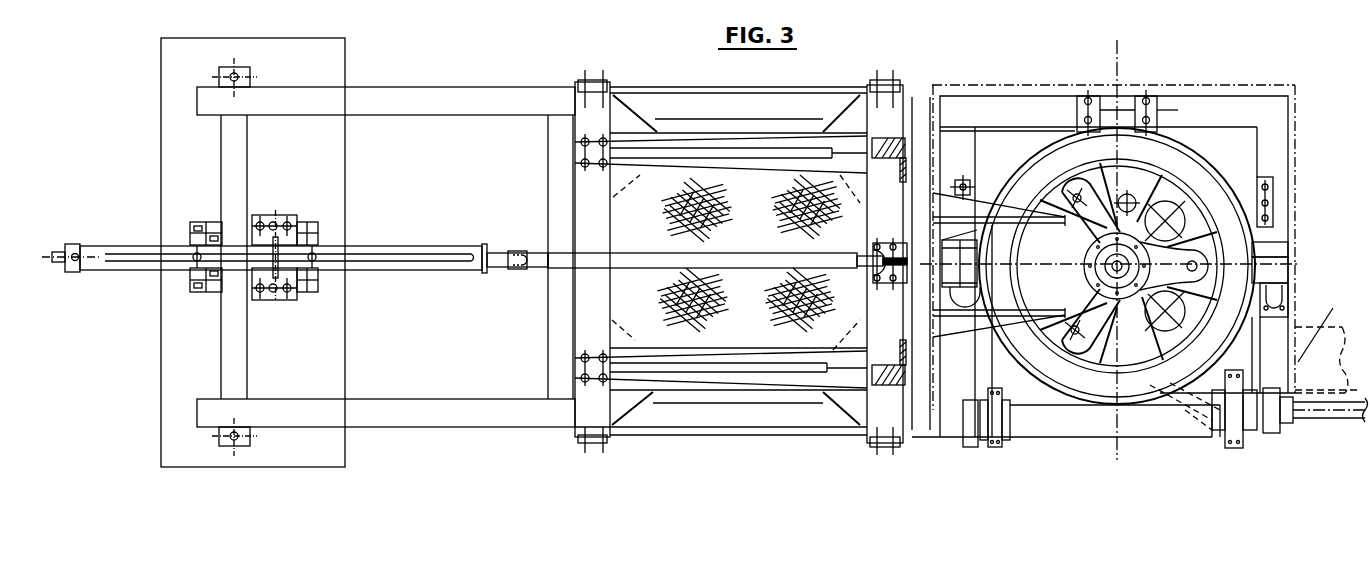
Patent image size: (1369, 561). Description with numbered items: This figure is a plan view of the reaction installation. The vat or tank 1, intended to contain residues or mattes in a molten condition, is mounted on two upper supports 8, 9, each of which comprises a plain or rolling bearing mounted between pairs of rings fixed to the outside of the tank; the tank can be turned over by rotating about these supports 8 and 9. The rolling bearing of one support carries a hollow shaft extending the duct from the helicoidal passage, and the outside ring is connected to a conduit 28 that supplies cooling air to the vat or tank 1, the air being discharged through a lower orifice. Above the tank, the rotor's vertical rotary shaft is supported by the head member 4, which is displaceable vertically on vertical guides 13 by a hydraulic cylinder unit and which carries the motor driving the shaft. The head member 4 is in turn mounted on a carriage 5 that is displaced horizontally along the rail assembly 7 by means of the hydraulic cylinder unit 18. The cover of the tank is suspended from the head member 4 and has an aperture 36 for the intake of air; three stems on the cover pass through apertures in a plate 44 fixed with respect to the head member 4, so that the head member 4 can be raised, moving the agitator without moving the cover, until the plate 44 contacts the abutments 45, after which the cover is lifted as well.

The vat or tank 1 is at (1170, 157).
The head member 4 is at (985, 193).
The carriage 5 is at (628, 381).
The rail assembly 7 is at (444, 416).
The upper support 8 is at (997, 422).
The upper support 9 is at (1240, 427).
The vertical guides 13 is at (880, 386).
The hydraulic cylinder unit 18 is at (400, 253).
The conduit 28 is at (1320, 417).
The aperture 36 is at (1127, 194).
The plate 44 is at (1168, 253).
The abutments 45 is at (1077, 334).